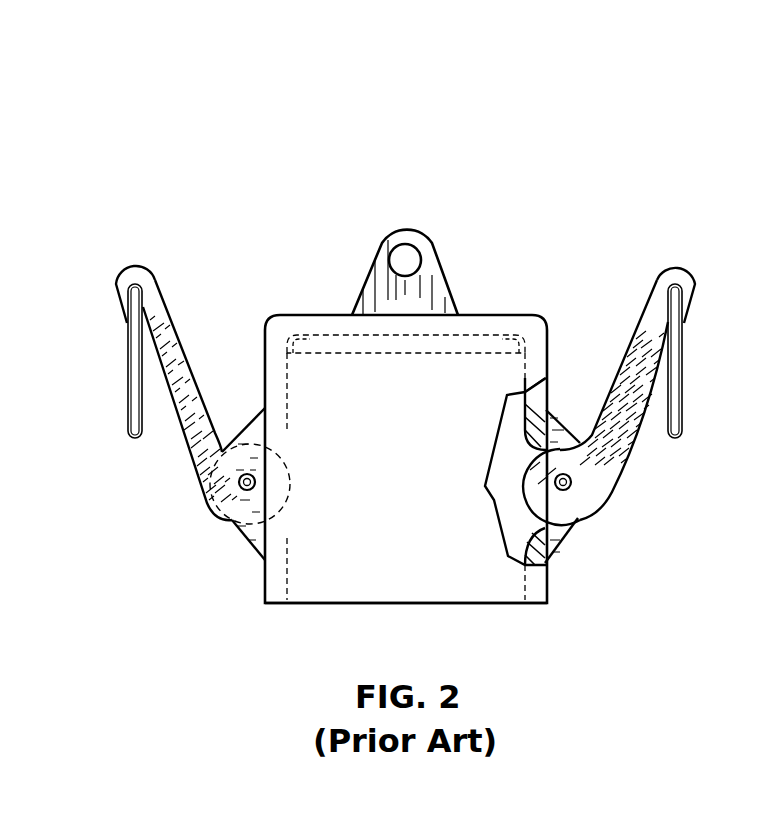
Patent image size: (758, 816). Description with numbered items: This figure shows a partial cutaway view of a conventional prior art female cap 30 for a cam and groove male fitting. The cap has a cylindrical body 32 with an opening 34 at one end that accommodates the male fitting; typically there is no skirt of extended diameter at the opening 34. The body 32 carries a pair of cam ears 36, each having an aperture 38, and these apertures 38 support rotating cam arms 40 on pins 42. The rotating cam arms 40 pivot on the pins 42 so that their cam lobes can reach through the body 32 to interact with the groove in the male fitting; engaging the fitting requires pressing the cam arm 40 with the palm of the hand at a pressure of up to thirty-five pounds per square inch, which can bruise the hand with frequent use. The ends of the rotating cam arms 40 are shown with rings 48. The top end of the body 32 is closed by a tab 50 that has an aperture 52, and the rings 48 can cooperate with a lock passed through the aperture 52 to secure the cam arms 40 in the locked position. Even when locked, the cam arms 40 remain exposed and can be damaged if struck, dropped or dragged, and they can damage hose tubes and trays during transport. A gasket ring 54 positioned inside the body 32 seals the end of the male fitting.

The female cap 30 is at (185, 170).
The body 32 is at (547, 330).
The opening 34 is at (345, 620).
The cam ears 36 is at (243, 533).
The apertures 38 is at (255, 477).
The rotating cam arms 40 is at (168, 412).
The pins 42 is at (247, 484).
The rings 48 is at (128, 380).
The tab 50 is at (386, 237).
The aperture 52 is at (410, 262).
The gasket ring 54 is at (428, 352).